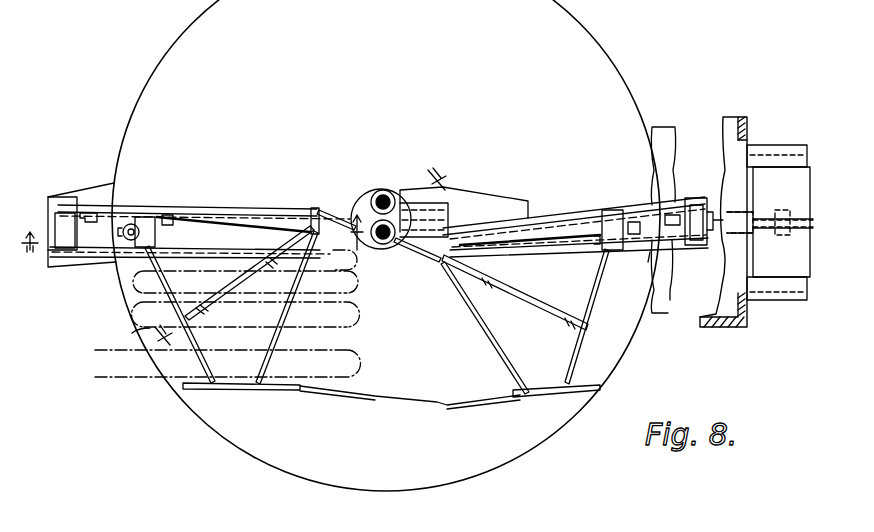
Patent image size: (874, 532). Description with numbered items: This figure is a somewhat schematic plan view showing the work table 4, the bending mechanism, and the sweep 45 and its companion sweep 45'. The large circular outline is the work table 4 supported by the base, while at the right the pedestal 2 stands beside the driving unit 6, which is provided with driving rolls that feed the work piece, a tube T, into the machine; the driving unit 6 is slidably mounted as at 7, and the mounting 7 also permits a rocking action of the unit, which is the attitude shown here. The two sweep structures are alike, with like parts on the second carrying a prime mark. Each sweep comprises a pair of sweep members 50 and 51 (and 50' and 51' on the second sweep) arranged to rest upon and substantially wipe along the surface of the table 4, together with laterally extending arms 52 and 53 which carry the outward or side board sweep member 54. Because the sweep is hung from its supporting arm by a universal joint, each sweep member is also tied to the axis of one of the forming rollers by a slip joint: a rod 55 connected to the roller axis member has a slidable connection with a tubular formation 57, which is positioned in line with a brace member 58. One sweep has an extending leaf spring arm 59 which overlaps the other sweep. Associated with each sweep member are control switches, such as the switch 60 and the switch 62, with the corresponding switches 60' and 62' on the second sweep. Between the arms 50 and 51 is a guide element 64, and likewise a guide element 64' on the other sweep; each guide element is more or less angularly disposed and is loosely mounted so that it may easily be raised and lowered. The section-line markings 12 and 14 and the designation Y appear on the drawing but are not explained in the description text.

The pedestal 2 is at (368, 194).
The work table 4 is at (185, 30).
The driving unit 6 is at (774, 246).
The slidable mounting 7 is at (780, 148).
The section line 12 is at (189, 245).
The section line 14 is at (289, 244).
The sweep 45 is at (81, 175).
The sweep 45' is at (671, 220).
The sweep member 50 is at (200, 217).
The sweep member 50' is at (575, 219).
The sweep member 51 is at (82, 273).
The sweep member 51' is at (630, 268).
The laterally extending arm 52 is at (195, 345).
The laterally extending arm 53 is at (280, 290).
The side board sweep member 54 is at (273, 388).
The rod 55 is at (385, 190).
The tubular formation 57 is at (325, 195).
The brace member 58 is at (232, 300).
The leaf spring arm 59 is at (405, 396).
The control switch 60 is at (58, 206).
The control switch 60' is at (694, 207).
The control switch 62 is at (148, 206).
The control switch 62' is at (606, 213).
The guide element 64 is at (233, 204).
The guide element 64' is at (530, 217).
The tubing coil Y is at (130, 340).
The tube T is at (300, 358).